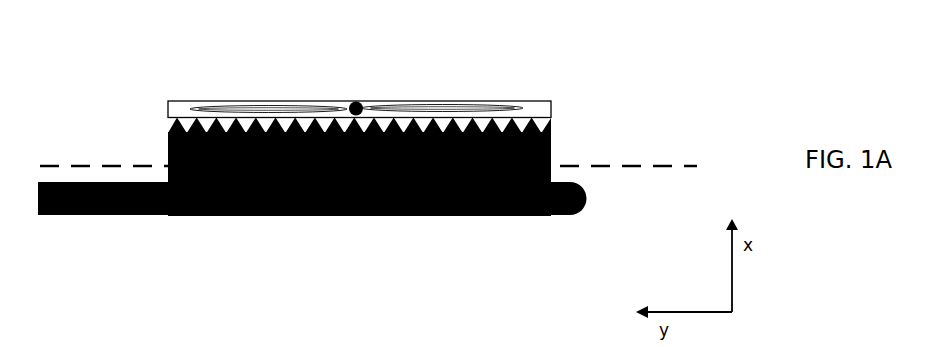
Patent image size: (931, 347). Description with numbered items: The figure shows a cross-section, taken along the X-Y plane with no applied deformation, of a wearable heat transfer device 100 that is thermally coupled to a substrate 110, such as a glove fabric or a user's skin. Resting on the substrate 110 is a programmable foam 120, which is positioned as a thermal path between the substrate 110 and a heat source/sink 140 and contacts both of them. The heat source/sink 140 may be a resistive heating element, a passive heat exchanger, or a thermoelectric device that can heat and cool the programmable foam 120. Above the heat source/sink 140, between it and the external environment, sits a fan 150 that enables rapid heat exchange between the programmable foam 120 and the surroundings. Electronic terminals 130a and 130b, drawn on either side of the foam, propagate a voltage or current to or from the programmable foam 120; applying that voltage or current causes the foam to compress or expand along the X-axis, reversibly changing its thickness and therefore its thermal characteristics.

The heat transfer device 100 is at (80, 20).
The substrate 110 is at (485, 215).
The programmable foam 120 is at (257, 215).
The electronic terminal 130a is at (98, 166).
The electronic terminal 130b is at (652, 166).
The heat source/sink 140 is at (523, 117).
The fan 150 is at (356, 102).